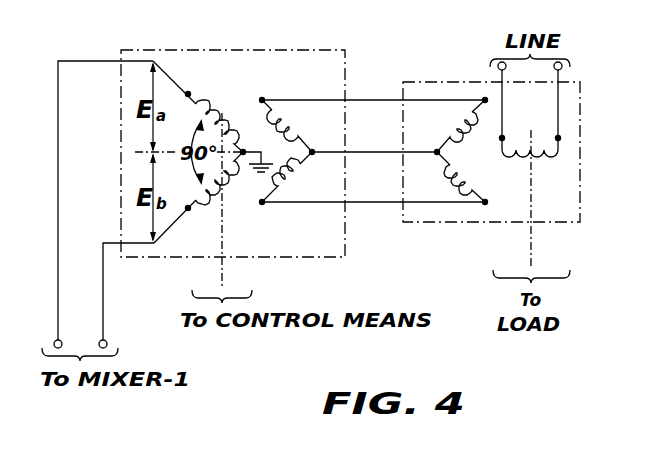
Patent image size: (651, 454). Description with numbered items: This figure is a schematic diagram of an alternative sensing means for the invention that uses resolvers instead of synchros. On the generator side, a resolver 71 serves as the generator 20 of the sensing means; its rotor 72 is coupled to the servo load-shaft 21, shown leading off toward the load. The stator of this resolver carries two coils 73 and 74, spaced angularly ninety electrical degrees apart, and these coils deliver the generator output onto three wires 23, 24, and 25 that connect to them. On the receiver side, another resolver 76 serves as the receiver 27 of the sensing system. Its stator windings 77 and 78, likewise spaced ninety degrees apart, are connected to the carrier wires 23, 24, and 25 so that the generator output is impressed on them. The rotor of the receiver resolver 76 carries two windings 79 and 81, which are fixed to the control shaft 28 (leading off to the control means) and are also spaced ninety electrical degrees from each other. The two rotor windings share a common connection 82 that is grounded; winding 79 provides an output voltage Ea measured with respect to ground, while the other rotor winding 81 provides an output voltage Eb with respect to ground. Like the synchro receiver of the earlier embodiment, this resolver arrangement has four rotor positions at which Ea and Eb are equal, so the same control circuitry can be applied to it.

The generator 20 is at (455, 82).
The servo load-shaft 21 is at (531, 248).
The wire 23 is at (377, 100).
The wire 24 is at (377, 152).
The wire 25 is at (377, 202).
The receiver 27 is at (345, 80).
The control shaft 28 is at (222, 262).
The resolver 71 is at (475, 148).
The rotor 72 is at (526, 138).
The coil 73 is at (462, 120).
The coil 74 is at (457, 179).
The resolver 76 is at (257, 145).
The stator winding 77 is at (292, 122).
The stator winding 78 is at (292, 180).
The rotor winding 79 is at (203, 103).
The rotor winding 81 is at (204, 202).
The common connection 82 is at (243, 158).